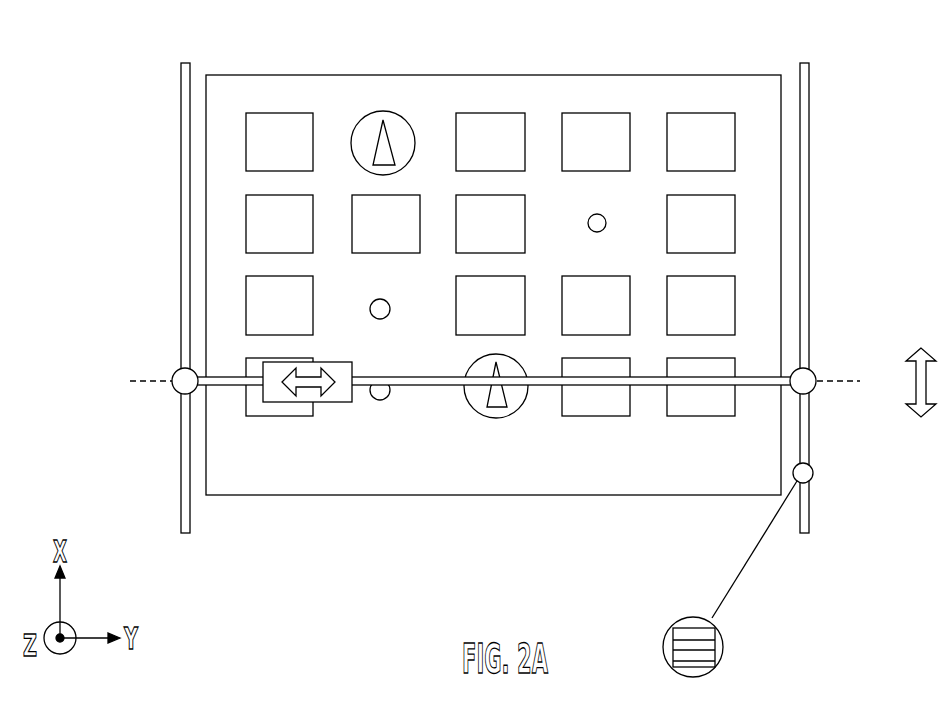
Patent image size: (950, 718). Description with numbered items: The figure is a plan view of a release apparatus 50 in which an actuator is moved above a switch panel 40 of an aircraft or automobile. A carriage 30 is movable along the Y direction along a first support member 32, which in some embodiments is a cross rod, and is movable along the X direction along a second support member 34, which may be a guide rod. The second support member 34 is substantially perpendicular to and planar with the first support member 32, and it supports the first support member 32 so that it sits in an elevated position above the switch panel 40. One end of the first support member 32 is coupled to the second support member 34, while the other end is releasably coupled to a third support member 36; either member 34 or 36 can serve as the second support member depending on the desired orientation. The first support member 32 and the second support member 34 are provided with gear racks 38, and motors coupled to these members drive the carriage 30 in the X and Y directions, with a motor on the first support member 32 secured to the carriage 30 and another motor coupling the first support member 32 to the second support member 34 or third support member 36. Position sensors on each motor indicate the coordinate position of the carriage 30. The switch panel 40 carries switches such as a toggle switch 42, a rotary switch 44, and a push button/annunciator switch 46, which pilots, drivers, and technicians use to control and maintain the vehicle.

The carriage 30 is at (273, 402).
The first support member 32 is at (229, 377).
The second support member 34 is at (181, 181).
The third support member 36 is at (810, 165).
The gear rack 38 is at (724, 647).
The switch panel 40 is at (505, 496).
The toggle switch 42 is at (607, 223).
The rotary switch 44 is at (383, 110).
The push button/annunciator switch 46 is at (490, 112).
The release apparatus 50 is at (522, 353).